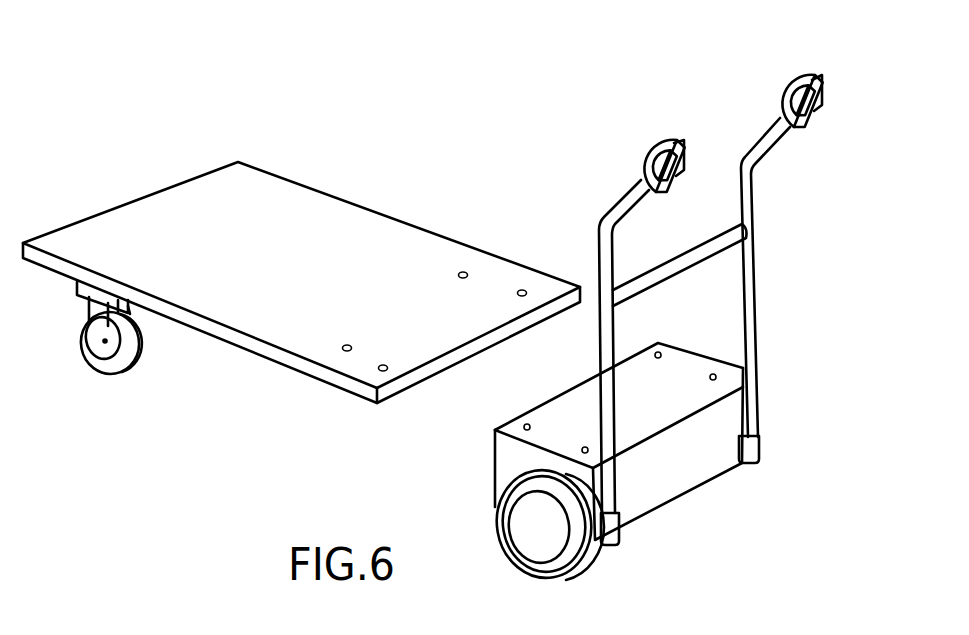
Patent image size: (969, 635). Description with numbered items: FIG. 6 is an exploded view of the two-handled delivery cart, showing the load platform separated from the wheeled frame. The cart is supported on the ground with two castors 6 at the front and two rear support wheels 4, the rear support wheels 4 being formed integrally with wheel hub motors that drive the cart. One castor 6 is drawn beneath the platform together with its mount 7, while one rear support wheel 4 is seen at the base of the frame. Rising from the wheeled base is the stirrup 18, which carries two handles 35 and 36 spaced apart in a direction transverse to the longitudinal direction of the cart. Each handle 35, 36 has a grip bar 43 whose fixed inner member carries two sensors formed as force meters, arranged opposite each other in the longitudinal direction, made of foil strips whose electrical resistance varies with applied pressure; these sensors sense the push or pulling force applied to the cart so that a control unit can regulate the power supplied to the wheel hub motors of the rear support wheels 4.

The rear support wheel 4 is at (557, 570).
The castor 6 is at (121, 357).
The caster swivel mount 7 is at (86, 319).
The stirrup 18 is at (757, 290).
The handle 35 is at (681, 153).
The handle 36 is at (822, 88).
The grip bar 43 is at (680, 165).